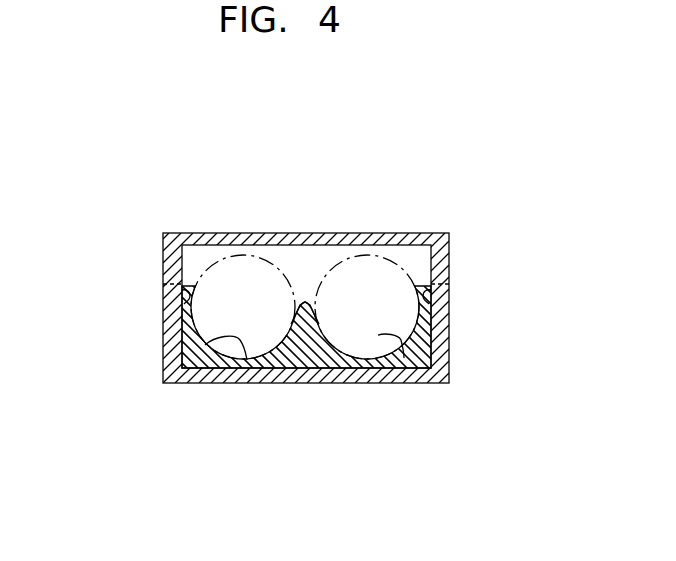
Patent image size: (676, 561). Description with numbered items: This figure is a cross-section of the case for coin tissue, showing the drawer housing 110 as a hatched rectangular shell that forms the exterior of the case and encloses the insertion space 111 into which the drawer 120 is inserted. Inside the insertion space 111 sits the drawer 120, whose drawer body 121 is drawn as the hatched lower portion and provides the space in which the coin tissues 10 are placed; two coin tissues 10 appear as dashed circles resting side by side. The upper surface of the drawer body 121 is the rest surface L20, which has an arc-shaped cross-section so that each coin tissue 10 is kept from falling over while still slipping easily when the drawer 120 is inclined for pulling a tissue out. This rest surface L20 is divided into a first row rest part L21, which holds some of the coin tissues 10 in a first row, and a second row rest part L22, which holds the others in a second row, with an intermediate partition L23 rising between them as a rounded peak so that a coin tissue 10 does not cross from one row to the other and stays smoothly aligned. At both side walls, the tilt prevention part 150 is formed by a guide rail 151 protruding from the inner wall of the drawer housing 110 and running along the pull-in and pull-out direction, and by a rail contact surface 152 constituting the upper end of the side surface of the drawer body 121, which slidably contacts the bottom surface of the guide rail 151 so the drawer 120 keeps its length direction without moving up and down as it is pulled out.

The coin tissue 10 is at (222, 257).
The drawer housing 110 is at (303, 233).
The insertion space 111 is at (284, 254).
The drawer 120 is at (306, 406).
The drawer body 121 is at (297, 380).
The tilt prevention part 150 is at (296, 271).
The guide rail 151 is at (182, 283).
The rail contact surface 152 is at (185, 306).
The rest surface L20 is at (187, 416).
The first row rest part L21 is at (188, 378).
The second row rest part L22 is at (425, 374).
The intermediate partition L23 is at (305, 303).